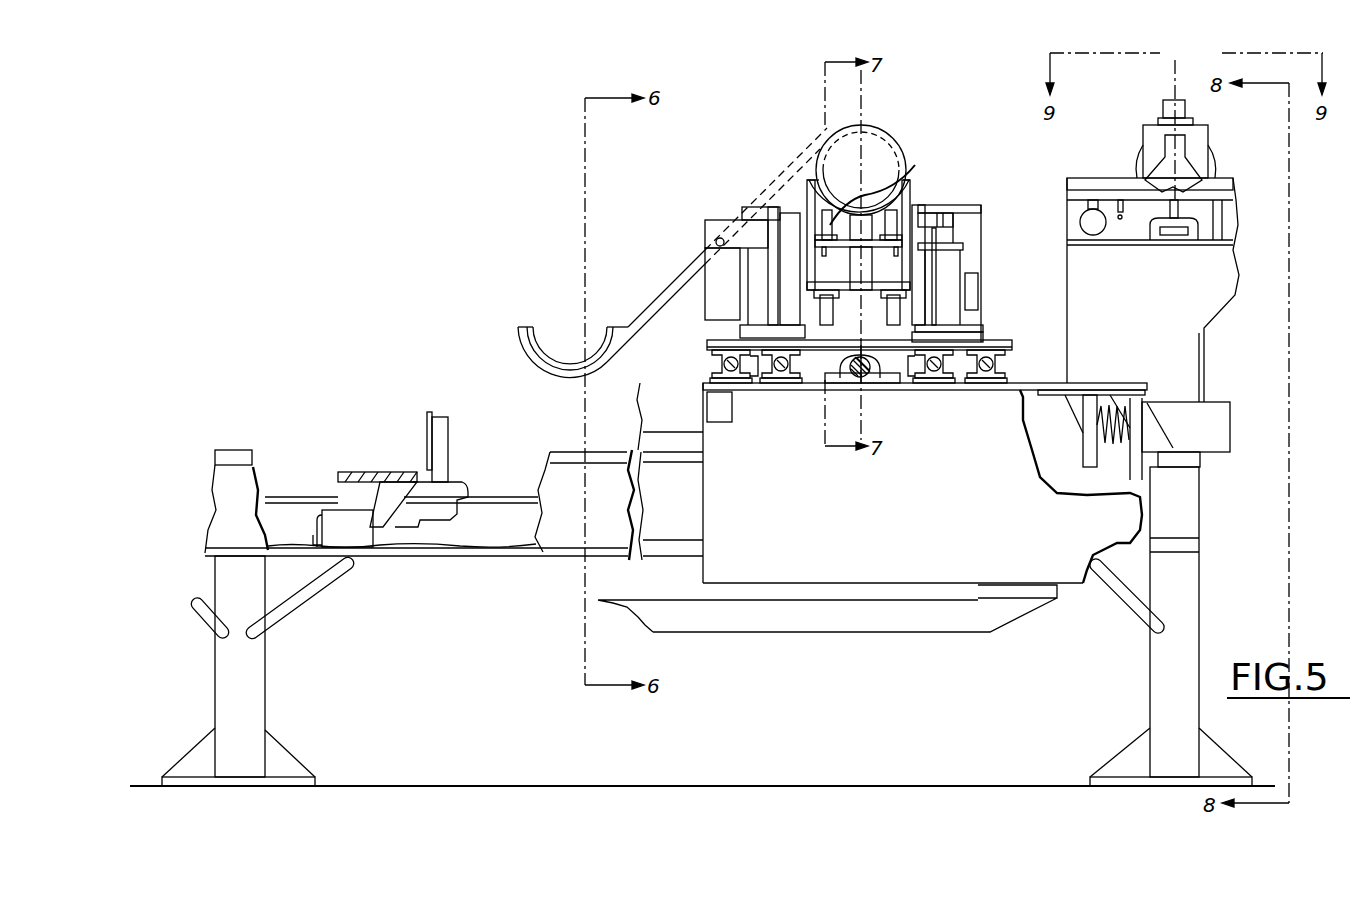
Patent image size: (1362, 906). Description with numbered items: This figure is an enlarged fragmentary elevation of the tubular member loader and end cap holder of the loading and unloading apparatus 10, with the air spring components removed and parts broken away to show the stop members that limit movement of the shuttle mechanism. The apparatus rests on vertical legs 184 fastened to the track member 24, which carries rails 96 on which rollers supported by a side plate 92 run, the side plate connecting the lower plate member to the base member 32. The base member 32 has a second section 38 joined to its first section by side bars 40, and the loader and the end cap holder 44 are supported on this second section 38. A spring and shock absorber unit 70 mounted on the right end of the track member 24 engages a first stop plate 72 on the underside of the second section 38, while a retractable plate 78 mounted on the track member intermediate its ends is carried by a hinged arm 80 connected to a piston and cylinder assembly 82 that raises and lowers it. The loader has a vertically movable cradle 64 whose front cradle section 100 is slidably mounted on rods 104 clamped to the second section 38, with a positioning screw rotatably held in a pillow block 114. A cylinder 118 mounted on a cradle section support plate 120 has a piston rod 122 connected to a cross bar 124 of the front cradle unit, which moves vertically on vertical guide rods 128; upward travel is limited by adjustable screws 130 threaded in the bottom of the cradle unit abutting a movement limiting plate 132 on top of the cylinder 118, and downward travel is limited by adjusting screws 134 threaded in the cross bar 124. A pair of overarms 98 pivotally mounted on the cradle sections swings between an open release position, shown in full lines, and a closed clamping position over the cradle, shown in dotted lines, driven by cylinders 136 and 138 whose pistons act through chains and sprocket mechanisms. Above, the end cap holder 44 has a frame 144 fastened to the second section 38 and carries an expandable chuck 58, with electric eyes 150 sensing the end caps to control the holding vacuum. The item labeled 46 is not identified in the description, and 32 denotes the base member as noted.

The loading and unloading apparatus 10 is at (1020, 668).
The track member 24 is at (1190, 495).
The base member 32 is at (892, 390).
The second section 38 is at (1022, 435).
The side bars 40 is at (645, 412).
The end cap holder 44 is at (1218, 188).
The pipe 46 is at (862, 110).
The expandable chuck 58 is at (1190, 172).
The vertically movable cradle 64 is at (913, 190).
The spring and shock absorber unit 70 is at (1213, 423).
The first stop plate 72 is at (1083, 432).
The retractable plate 78 is at (429, 448).
The hinged arm 80 is at (448, 430).
The piston and cylinder assembly 82 is at (345, 530).
The side plate 92 is at (893, 573).
The rails 96 is at (585, 540).
The overarms 98 is at (680, 295).
The front cradle section 100 is at (920, 207).
The rods 104 is at (735, 375).
The pillow block 114 is at (880, 385).
The cylinder 118 is at (935, 320).
The cradle section support plate 120 is at (965, 355).
The piston rod 122 is at (905, 262).
The cross bar 124 is at (880, 240).
The vertical guide rods 128 is at (775, 318).
The adjustable screws 130 is at (800, 360).
The movement limiting plate 132 is at (790, 232).
The adjusting screws 134 is at (905, 158).
The cylinder 136 is at (718, 245).
The cylinder 138 is at (747, 255).
The frame 144 is at (1233, 270).
The electric eyes 150 is at (1182, 104).
The vertical legs 184 is at (253, 680).